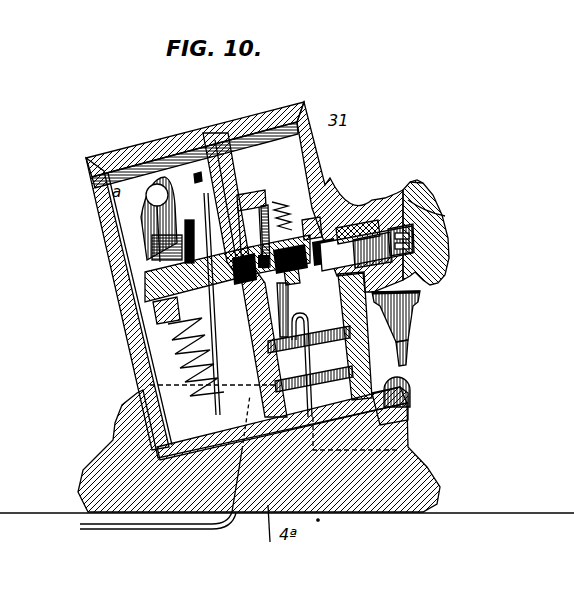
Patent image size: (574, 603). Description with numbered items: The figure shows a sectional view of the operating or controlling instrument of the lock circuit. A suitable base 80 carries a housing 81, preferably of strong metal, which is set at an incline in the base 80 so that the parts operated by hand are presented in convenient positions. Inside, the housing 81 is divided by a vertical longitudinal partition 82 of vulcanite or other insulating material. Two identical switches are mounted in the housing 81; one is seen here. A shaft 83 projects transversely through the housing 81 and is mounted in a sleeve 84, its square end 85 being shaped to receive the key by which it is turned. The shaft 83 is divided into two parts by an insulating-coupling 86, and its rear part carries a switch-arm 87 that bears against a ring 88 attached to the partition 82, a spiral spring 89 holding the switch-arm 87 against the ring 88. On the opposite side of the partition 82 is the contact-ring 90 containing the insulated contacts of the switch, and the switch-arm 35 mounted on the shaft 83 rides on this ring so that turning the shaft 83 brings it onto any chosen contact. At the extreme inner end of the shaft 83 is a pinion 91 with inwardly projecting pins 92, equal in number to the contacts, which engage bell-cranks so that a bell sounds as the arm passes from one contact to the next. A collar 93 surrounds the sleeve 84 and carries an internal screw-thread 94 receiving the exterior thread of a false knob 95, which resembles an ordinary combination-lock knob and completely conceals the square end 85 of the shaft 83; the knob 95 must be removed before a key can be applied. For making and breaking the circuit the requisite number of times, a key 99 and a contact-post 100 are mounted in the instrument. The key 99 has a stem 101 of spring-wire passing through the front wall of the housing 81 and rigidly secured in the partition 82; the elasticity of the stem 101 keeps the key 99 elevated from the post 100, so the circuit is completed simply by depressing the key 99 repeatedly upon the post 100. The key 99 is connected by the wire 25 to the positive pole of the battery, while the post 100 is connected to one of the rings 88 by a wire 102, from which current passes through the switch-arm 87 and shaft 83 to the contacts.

The wire 25 is at (242, 394).
The switch-arm 35 is at (230, 198).
The base 80 is at (259, 451).
The housing 81 is at (305, 104).
The partition 82 is at (208, 160).
The shaft 83 is at (216, 296).
The sleeve 84 is at (352, 224).
The square end 85 is at (428, 211).
The insulating-coupling 86 is at (292, 254).
The switch-arm 87 is at (293, 292).
The ring 88 is at (270, 215).
The spiral spring 89 is at (266, 268).
The contact-ring 90 is at (196, 162).
The pinion 91 is at (152, 281).
The pins 92 is at (174, 320).
The collar 93 is at (340, 196).
The internal screw-thread 94 is at (420, 182).
The false knob 95 is at (452, 245).
The key 99 is at (413, 324).
The contact-post 100 is at (408, 384).
The stem 101 is at (305, 373).
The wire 102 is at (322, 388).